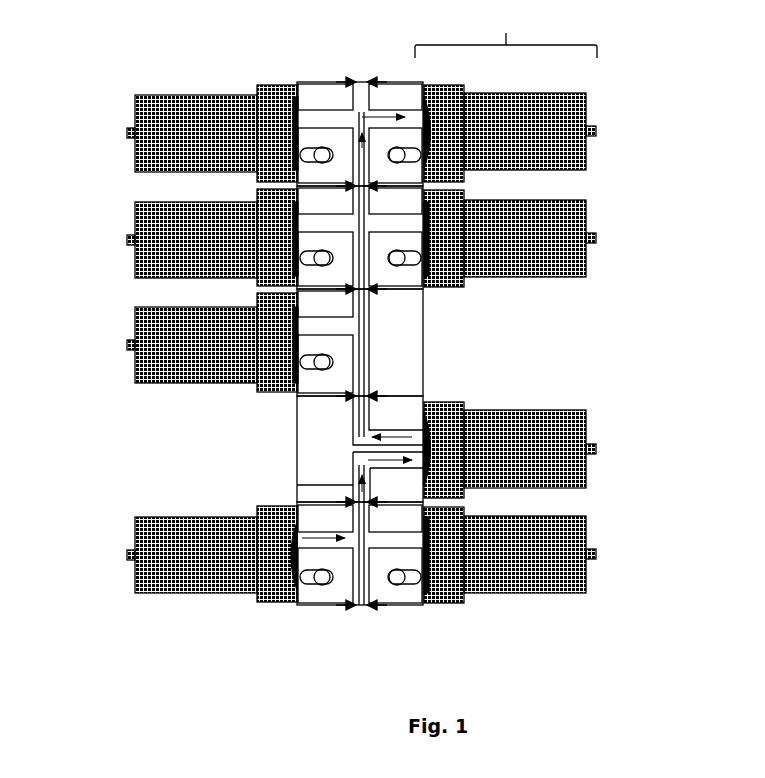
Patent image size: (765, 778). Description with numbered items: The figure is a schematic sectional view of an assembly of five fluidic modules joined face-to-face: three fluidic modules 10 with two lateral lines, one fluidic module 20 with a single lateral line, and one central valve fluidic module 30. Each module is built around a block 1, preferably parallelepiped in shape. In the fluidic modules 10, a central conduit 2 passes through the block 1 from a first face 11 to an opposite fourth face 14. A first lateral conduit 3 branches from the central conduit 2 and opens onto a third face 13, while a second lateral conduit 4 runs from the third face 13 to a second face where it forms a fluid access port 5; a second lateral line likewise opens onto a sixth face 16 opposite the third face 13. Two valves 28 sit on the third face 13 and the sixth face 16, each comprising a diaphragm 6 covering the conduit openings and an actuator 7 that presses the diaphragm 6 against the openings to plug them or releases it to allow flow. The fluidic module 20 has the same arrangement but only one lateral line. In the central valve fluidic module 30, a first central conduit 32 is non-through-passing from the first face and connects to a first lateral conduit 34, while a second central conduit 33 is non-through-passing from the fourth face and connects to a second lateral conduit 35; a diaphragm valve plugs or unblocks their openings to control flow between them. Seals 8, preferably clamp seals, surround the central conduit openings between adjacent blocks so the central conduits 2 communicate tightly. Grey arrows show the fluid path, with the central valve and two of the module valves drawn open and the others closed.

The block 1 is at (300, 92).
The central conduit 2 is at (363, 90).
The first lateral conduit 3 is at (322, 110).
The second lateral conduit 4 is at (300, 150).
The fluid access port 5 is at (320, 367).
The diaphragm 6 is at (435, 130).
The actuator 7 is at (525, 94).
The seal 8 is at (380, 393).
The fluidic module with two lateral lines 10 is at (612, 147).
The first face 11 is at (318, 608).
The third face 13 is at (297, 93).
The fourth face 14 is at (325, 80).
The sixth face 16 is at (428, 605).
The fluidic module with one lateral line 20 is at (94, 359).
The valve 28 is at (506, 31).
The central valve fluidic module 30 is at (618, 463).
The first central conduit 32 is at (353, 483).
The second central conduit 33 is at (358, 437).
The first lateral conduit 34 is at (403, 468).
The second lateral conduit 35 is at (400, 430).